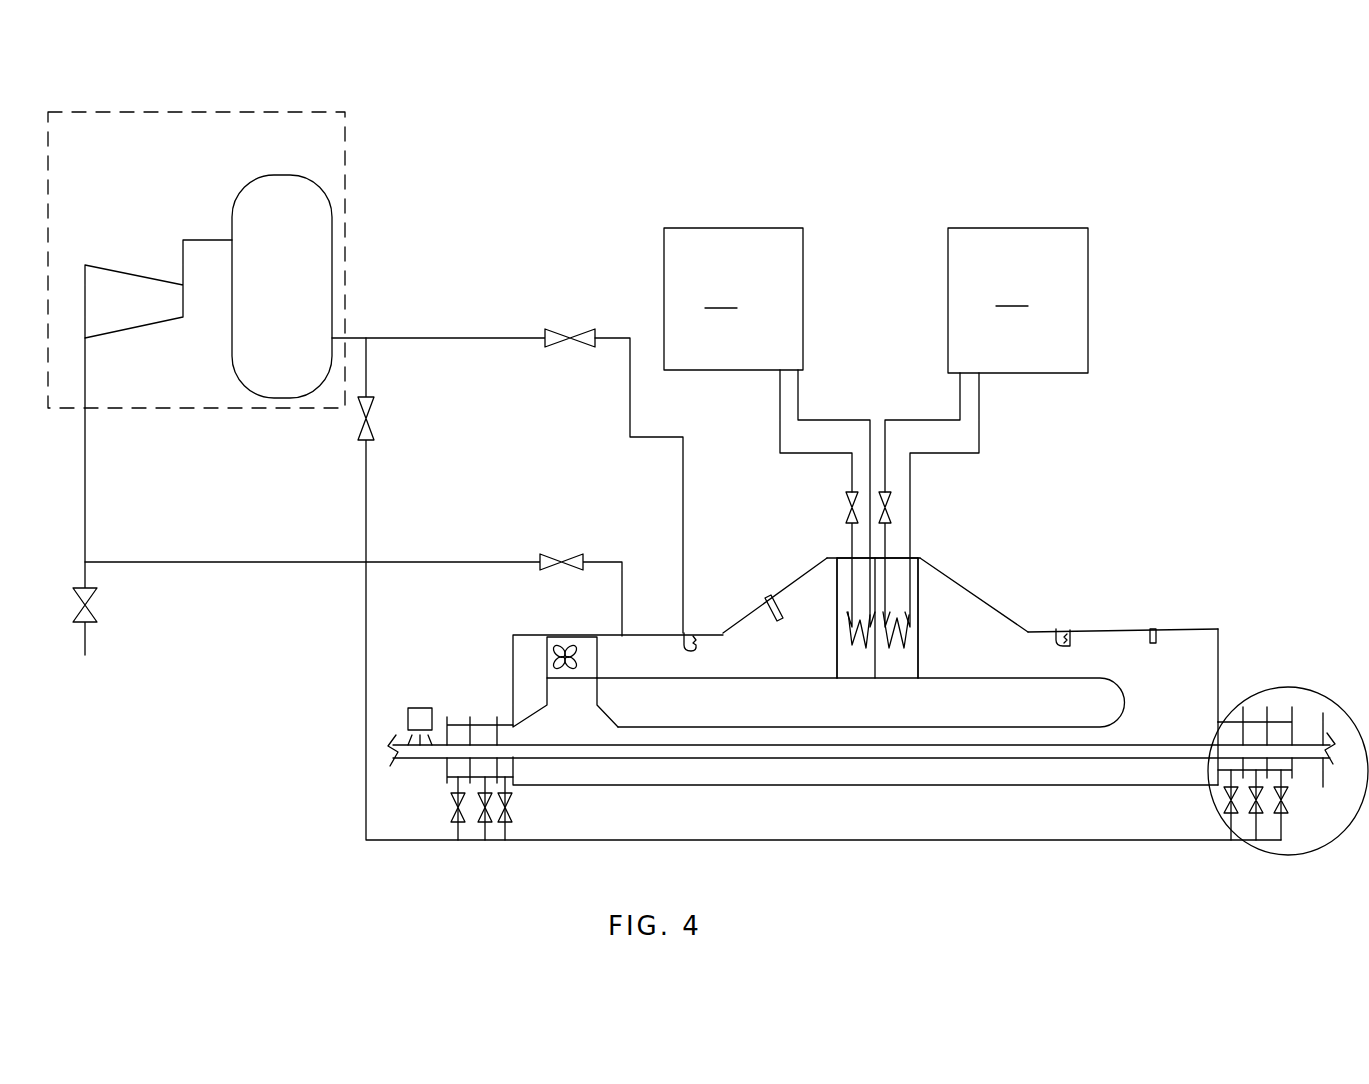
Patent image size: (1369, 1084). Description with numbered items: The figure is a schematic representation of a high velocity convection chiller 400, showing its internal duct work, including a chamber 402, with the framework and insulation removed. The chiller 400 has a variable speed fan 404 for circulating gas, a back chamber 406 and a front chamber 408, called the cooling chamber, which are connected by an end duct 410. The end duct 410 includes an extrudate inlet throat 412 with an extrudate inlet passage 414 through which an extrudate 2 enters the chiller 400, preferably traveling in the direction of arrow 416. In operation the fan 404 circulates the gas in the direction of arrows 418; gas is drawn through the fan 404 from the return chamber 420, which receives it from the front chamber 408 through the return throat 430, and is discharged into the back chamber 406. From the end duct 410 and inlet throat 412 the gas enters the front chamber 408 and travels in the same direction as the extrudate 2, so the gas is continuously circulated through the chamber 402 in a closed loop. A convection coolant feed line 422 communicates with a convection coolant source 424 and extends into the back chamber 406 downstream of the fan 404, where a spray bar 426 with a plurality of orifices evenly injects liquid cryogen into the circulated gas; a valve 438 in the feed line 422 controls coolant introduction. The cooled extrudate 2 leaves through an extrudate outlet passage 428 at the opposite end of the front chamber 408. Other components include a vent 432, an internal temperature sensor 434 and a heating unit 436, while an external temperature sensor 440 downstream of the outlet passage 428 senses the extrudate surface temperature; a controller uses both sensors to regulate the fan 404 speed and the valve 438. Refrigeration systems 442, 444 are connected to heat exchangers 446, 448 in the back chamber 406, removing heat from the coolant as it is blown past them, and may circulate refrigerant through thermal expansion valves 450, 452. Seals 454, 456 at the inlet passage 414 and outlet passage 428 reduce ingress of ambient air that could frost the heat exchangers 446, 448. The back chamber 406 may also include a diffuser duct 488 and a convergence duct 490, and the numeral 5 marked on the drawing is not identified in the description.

The high velocity convection chiller 400 is at (1116, 169).
The chamber 402 is at (1144, 640).
The variable speed fan 404 is at (570, 638).
The back chamber 406 is at (965, 600).
The front chamber 408 is at (806, 794).
The end duct 410 is at (1221, 643).
The extrudate inlet throat 412 is at (1215, 728).
The extrudate inlet passage 414 is at (1222, 737).
The arrow 416 is at (1205, 746).
The arrows 418 is at (642, 671).
The return chamber 420 is at (545, 700).
The convection coolant feed line 422 is at (686, 502).
The convection coolant source 424 is at (262, 110).
The spray bar 426 is at (668, 629).
The extrudate outlet passage 428 is at (510, 742).
The return throat 430 is at (590, 718).
The vent 432 is at (603, 560).
The internal temperature sensor 434 is at (1160, 636).
The heating unit 436 is at (782, 596).
The valve 438 is at (552, 326).
The external temperature sensor 440 is at (410, 708).
The refrigeration system 442 is at (986, 427).
The refrigeration system 444 is at (769, 427).
The heat exchanger 446 is at (920, 657).
The heat exchanger 448 is at (837, 658).
The thermal expansion valve 450 is at (892, 500).
The thermal expansion valve 452 is at (842, 497).
The seal 454 is at (1291, 716).
The seal 456 is at (490, 710).
The diffuser duct 488 is at (745, 615).
The convergence duct 490 is at (1006, 612).
The extrudate 2 is at (1306, 768).
The view reference 5 is at (1305, 695).